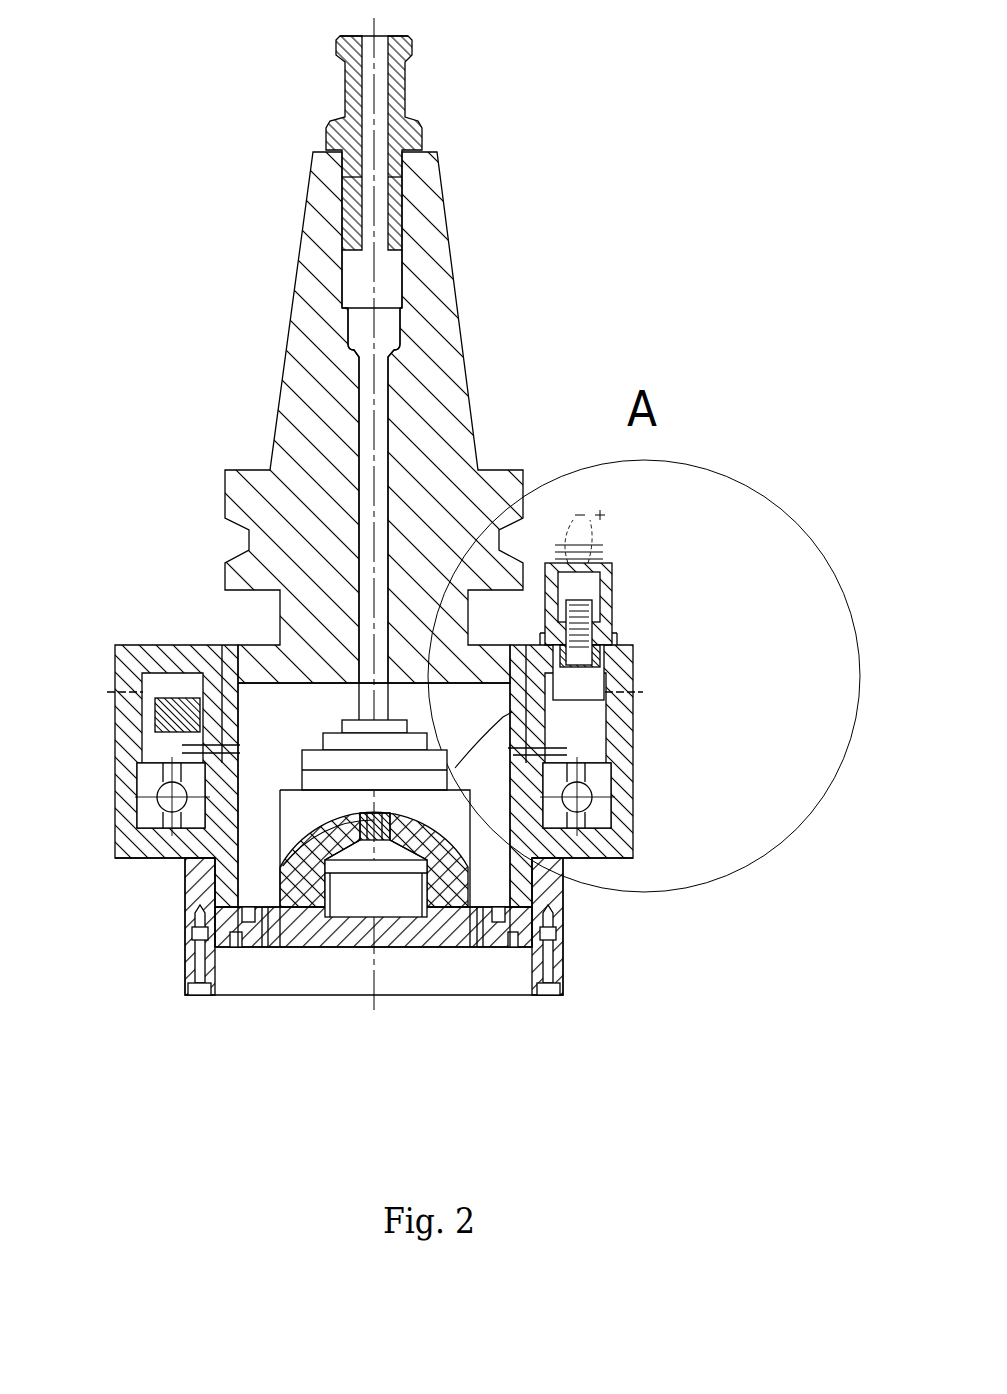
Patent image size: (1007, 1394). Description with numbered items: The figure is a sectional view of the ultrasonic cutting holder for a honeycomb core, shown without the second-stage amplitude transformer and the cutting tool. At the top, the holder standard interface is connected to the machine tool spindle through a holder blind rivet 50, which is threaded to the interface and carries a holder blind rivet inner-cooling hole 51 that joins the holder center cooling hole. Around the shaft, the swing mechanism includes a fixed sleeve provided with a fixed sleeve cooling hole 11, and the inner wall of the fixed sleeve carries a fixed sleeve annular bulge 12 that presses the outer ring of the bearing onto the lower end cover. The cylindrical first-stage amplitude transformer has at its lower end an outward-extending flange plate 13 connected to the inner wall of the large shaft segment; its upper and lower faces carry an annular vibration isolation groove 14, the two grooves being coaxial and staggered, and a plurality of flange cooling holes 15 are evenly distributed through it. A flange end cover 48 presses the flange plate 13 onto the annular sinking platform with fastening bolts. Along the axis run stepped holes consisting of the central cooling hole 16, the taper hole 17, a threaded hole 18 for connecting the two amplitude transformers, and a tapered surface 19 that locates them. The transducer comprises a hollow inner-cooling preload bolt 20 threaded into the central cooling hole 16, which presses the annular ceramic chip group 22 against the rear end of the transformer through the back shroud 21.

The fixed sleeve cooling hole 11 is at (143, 692).
The fixed sleeve annular bulge 12 is at (147, 765).
The flange plate 13 is at (512, 910).
The annular vibration isolation groove 14 is at (215, 925).
The flange cooling hole 15 is at (272, 920).
The central cooling hole of the first-stage amplitude transformer 16 is at (541, 996).
The taper hole of the first-stage amplitude transformer 17 is at (395, 903).
The threaded hole connecting the first-stage and second-stage amplitude transformers 18 is at (335, 918).
The tapered surface locating the first-stage and second-stage amplitude transformers 19 is at (305, 920).
The inner-cooling preload bolt 20 is at (368, 722).
The back shroud 21 is at (323, 735).
The annular ceramic chip group 22 is at (312, 765).
The flange end cover 48 is at (197, 985).
The holder blind rivet 50 is at (415, 50).
The holder blind rivet inner-cooling hole 51 is at (372, 112).